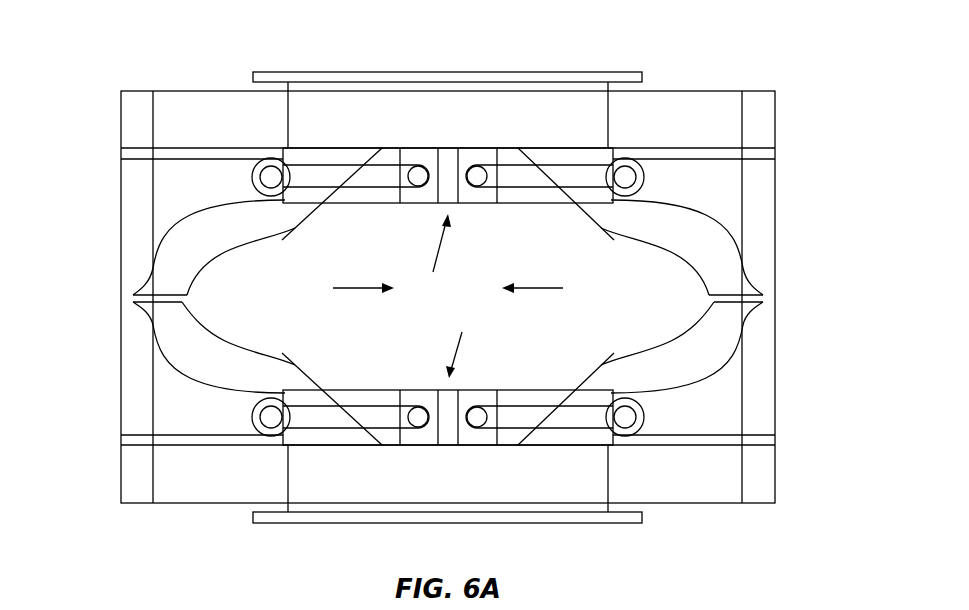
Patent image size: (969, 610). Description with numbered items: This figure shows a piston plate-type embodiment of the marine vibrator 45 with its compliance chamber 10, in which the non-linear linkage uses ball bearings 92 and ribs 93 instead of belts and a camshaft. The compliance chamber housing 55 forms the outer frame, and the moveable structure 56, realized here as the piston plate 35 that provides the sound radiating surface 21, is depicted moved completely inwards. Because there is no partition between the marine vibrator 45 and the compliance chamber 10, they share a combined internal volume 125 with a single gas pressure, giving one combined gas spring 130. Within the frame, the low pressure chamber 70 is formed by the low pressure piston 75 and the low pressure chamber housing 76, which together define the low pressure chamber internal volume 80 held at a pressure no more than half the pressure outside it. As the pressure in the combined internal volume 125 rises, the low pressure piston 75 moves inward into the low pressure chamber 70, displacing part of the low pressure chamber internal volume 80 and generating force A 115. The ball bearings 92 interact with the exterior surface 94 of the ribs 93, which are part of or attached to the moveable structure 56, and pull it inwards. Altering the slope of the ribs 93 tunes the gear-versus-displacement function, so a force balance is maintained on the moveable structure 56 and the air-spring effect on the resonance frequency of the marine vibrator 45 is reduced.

The marine vibrator 45 is at (110, 50).
The compliance chamber 10 is at (792, 215).
The compliance chamber housing 55 is at (760, 363).
The sound radiating surface 21 is at (452, 70).
The piston plate 35 is at (350, 110).
The moveable structure 56 is at (562, 110).
The combined internal volume 125 is at (678, 185).
The low pressure chamber internal volume 80 is at (362, 204).
The low pressure chamber housing 76 is at (540, 204).
The low pressure piston 75 is at (413, 204).
The ball bearings 92 is at (271, 175).
The exterior surface 94 is at (217, 205).
The ribs 93 is at (177, 243).
The combined gas spring 130 is at (220, 302).
The low pressure chamber 70 is at (451, 296).
The force A 115 is at (357, 288).